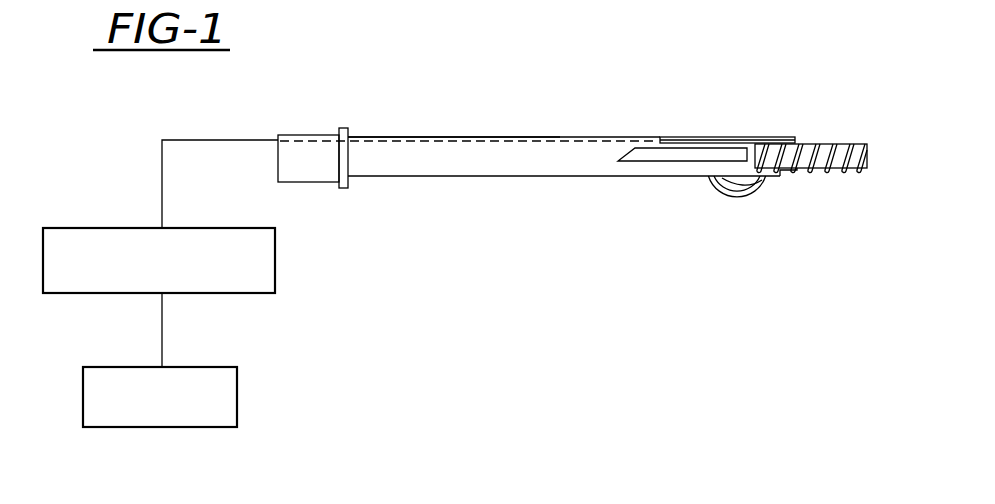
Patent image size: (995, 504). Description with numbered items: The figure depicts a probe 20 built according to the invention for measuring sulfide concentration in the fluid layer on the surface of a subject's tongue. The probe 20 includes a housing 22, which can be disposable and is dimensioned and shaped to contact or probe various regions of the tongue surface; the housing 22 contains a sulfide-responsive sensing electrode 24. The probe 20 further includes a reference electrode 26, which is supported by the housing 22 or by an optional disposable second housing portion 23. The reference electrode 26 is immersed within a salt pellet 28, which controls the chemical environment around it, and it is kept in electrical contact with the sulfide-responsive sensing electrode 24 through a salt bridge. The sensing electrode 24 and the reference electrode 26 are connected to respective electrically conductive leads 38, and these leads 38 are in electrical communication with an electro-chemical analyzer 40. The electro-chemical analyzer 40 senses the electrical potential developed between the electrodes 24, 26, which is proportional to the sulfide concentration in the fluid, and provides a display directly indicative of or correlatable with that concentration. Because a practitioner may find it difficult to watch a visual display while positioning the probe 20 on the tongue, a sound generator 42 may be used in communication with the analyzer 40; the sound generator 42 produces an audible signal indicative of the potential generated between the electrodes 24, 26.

The probe 20 is at (571, 102).
The housing 22 is at (379, 126).
The second housing portion 23 is at (692, 90).
The sulfide-responsive sensing electrode 24 is at (824, 145).
The reference electrode 26 is at (733, 180).
The salt pellet 28 is at (748, 182).
The electrically conductive leads 38 is at (187, 140).
The electro-chemical analyzer 40 is at (95, 228).
The sound generator 42 is at (237, 405).